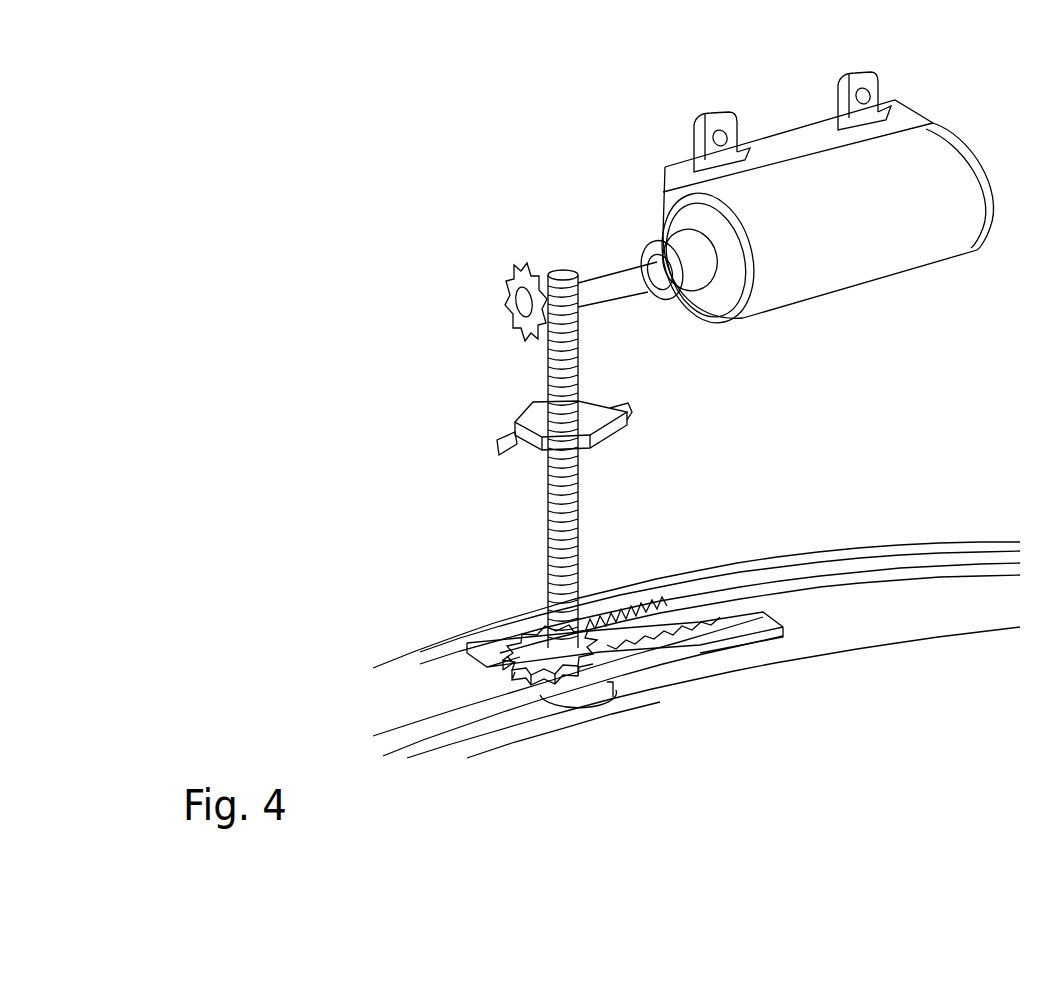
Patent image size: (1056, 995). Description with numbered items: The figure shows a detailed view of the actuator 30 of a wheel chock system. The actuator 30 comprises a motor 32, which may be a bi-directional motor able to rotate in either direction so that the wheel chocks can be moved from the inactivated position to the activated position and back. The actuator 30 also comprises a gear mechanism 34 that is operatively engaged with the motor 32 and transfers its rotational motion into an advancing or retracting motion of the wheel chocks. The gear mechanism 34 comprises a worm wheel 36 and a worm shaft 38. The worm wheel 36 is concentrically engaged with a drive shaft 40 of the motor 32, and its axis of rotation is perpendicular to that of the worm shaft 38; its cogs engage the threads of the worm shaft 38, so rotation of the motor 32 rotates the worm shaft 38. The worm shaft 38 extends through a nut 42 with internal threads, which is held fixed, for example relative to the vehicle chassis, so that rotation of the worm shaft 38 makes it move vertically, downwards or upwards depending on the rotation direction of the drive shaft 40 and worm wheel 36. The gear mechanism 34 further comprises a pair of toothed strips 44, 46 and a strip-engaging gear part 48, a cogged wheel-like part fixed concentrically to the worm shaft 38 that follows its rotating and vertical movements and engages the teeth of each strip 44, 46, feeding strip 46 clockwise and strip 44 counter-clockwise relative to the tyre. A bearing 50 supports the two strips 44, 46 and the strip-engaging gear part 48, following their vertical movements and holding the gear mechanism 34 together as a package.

The actuator 30 is at (409, 144).
The motor 32 is at (917, 272).
The gear mechanism 34 is at (472, 325).
The worm wheel 36 is at (527, 266).
The worm shaft 38 is at (578, 358).
The drive shaft 40 is at (609, 273).
The nut 42 is at (525, 410).
The strip 44 is at (447, 718).
The strip 46 is at (706, 585).
The strip-engaging gear part 48 is at (540, 645).
The bearing 50 is at (593, 698).